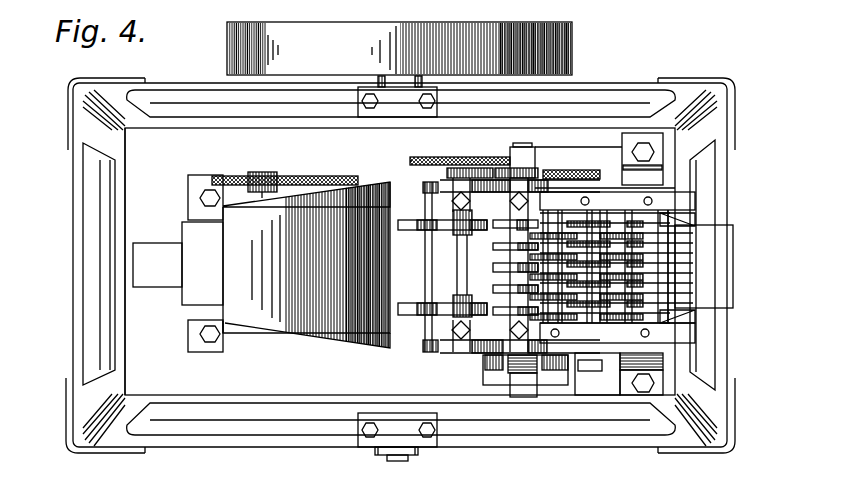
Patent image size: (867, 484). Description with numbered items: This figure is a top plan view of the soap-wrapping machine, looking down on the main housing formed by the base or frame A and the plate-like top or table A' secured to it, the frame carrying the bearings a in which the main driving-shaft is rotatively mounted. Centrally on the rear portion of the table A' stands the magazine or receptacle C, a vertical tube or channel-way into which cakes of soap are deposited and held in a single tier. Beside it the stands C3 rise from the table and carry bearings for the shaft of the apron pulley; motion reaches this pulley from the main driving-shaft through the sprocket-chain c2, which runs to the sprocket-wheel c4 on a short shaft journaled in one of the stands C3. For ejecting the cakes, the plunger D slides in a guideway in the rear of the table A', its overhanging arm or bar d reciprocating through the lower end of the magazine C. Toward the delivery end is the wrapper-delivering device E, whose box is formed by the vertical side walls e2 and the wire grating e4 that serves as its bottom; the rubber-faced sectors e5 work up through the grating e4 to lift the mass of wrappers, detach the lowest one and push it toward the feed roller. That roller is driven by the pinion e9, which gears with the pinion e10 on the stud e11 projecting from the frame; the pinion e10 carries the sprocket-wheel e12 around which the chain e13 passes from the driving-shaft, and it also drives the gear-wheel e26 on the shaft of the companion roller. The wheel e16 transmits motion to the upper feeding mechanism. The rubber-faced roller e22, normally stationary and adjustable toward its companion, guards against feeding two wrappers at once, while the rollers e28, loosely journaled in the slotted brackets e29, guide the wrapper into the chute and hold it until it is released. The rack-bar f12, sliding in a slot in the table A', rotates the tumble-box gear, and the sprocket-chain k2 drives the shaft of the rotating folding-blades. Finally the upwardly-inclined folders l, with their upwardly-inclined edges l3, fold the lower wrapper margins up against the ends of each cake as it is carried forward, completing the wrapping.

The base or frame A is at (375, 265).
The top or table A' is at (145, 261).
The bearings a is at (397, 268).
The magazine or receptacle C is at (306, 265).
The stands C3 is at (188, 199).
The sprocket-chain c2 is at (305, 176).
The sprocket-wheel c4 is at (232, 176).
The plunger D is at (157, 265).
The overhanging arm or bar d is at (202, 263).
The wrapper-delivering device E is at (549, 250).
The vertical side walls e2 is at (669, 257).
The wire grating e4 is at (633, 318).
The rubber-faced sectors e5 is at (500, 248).
The pinion e9 is at (540, 172).
The pinion e10 is at (512, 168).
The stud e11 is at (498, 182).
The sprocket-wheel e12 is at (470, 167).
The chain e13 is at (412, 161).
The wheel e16 is at (500, 370).
The roller e22 is at (455, 226).
The gear-wheel e26 is at (440, 162).
The rollers e28 is at (399, 216).
The slotted brackets e29 is at (420, 223).
The rack-bar f12 is at (597, 374).
The sprocket-chain k2 is at (583, 169).
The upwardly-inclined folders l is at (736, 267).
The upwardly-inclined edges l3 is at (678, 218).